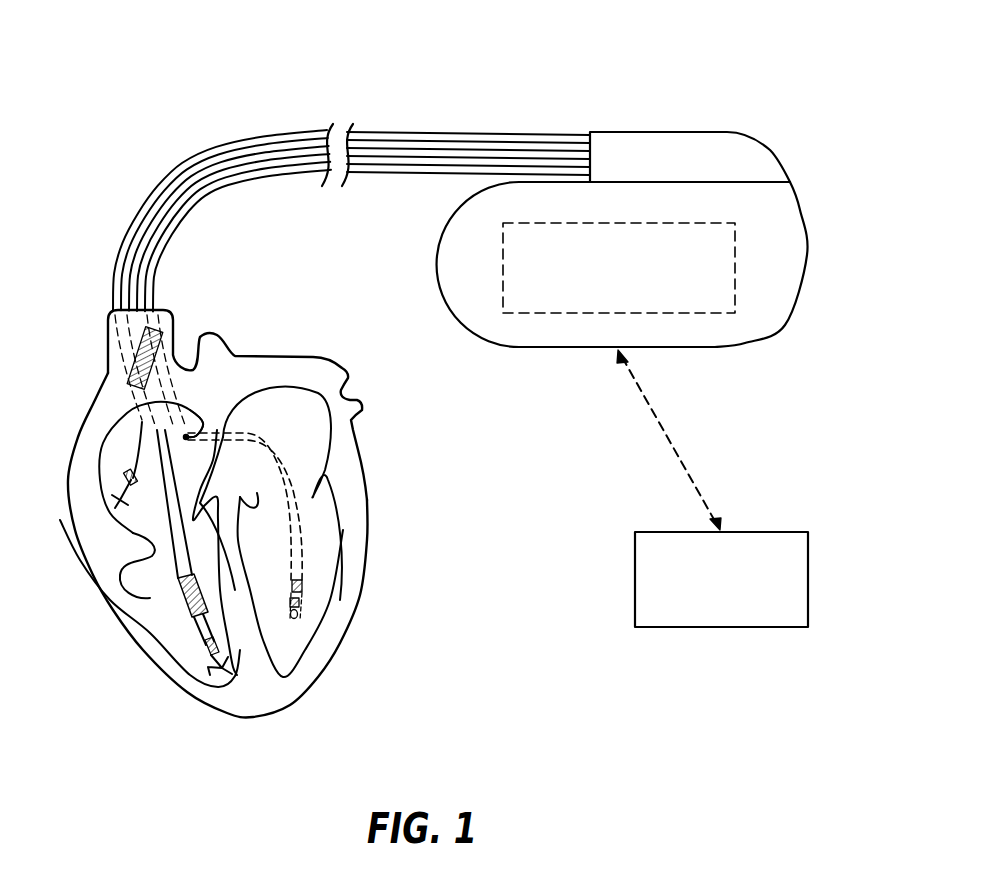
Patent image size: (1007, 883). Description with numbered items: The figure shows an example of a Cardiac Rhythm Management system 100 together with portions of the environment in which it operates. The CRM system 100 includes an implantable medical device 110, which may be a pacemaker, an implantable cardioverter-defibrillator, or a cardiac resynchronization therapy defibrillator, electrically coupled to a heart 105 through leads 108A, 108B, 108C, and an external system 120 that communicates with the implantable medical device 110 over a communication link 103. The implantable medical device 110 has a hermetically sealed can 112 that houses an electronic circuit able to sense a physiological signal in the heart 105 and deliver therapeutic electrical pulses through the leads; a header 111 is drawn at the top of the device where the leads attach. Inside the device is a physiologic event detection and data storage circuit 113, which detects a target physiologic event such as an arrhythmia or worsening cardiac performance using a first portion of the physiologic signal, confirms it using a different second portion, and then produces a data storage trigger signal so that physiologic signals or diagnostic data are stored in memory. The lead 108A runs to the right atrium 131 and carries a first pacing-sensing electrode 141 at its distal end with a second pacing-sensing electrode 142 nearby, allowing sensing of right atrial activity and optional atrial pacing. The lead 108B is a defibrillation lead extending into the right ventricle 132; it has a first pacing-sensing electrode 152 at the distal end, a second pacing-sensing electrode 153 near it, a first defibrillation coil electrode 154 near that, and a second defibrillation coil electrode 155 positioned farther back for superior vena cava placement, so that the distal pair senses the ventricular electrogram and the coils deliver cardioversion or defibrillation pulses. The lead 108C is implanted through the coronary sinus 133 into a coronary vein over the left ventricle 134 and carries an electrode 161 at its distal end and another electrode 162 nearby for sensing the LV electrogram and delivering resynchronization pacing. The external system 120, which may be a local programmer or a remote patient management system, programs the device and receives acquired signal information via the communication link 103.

The Cardiac Rhythm Management system 100 is at (129, 73).
The communication link 103 is at (670, 438).
The heart 105 is at (365, 495).
The lead 108A is at (254, 146).
The lead 108B is at (203, 186).
The lead 108C is at (220, 203).
The implantable medical device 110 is at (689, 118).
The header 111 is at (770, 143).
The hermetically sealed can 112 is at (808, 247).
The physiologic event detection and data storage circuit 113 is at (620, 222).
The external system 120 is at (810, 580).
The right atrium 131 is at (125, 450).
The right ventricle 132 is at (150, 565).
The coronary sinus 133 is at (187, 427).
The left ventricle 134 is at (293, 647).
The first pacing-sensing electrode 141 is at (110, 508).
The second pacing-sensing electrode 142 is at (130, 477).
The first pacing-sensing electrode 152 is at (217, 682).
The second pacing-sensing electrode 153 is at (203, 655).
The first defibrillation coil electrode 154 is at (178, 600).
The second defibrillation coil electrode 155 is at (130, 358).
The electrode 161 is at (294, 606).
The electrode 162 is at (302, 587).